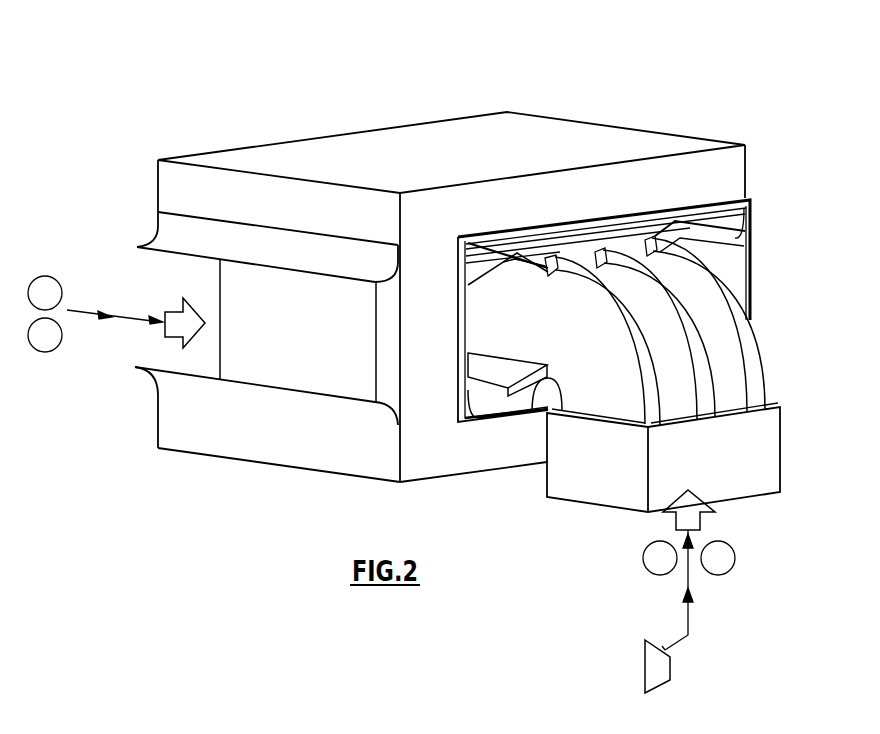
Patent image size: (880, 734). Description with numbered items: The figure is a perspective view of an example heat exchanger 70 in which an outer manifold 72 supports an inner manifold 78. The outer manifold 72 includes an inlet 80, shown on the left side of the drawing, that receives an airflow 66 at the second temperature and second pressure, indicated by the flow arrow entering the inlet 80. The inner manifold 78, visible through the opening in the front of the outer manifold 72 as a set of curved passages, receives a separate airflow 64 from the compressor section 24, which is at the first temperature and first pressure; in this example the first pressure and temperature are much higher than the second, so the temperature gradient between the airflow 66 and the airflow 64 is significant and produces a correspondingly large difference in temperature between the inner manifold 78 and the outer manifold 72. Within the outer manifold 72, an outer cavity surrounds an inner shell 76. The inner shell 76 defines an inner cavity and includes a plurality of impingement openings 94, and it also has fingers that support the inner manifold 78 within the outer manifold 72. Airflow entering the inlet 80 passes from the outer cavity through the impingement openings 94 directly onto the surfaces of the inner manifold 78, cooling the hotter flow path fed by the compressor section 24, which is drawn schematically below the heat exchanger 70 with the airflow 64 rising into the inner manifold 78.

The heat exchanger 70 is at (682, 108).
The outer manifold 72 is at (563, 133).
The inlet 80 is at (196, 262).
The inner shell 76 is at (483, 408).
The inner manifold 78 is at (745, 337).
The airflow 66 is at (122, 321).
The airflow 64 is at (690, 618).
The impingement openings 94 is at (662, 646).
The compressor section 24 is at (662, 686).